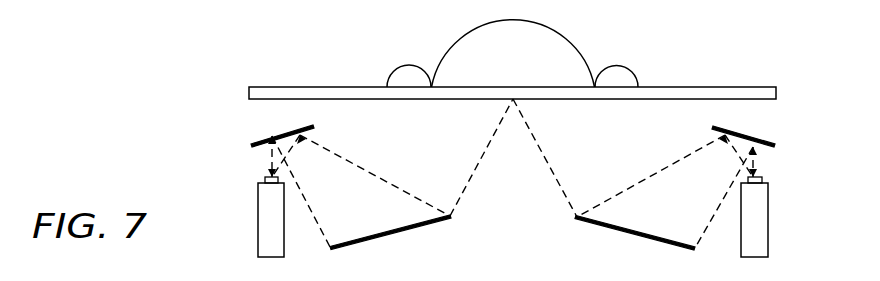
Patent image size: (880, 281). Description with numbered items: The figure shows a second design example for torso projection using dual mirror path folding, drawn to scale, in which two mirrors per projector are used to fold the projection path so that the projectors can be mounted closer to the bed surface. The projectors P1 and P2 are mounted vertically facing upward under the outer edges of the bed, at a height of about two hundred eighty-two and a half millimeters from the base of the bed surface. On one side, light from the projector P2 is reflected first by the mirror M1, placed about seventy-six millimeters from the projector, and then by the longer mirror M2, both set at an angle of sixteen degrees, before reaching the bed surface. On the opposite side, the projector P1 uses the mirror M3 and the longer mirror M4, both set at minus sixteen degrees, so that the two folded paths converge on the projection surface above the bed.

The mirror M1 is at (282, 126).
The mirror M2 is at (390, 241).
The mirror M3 is at (635, 242).
The mirror M4 is at (743, 128).
The projector P1 is at (769, 217).
The projector P2 is at (255, 217).